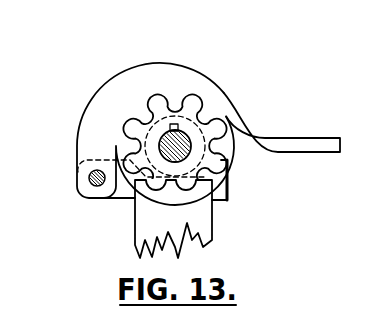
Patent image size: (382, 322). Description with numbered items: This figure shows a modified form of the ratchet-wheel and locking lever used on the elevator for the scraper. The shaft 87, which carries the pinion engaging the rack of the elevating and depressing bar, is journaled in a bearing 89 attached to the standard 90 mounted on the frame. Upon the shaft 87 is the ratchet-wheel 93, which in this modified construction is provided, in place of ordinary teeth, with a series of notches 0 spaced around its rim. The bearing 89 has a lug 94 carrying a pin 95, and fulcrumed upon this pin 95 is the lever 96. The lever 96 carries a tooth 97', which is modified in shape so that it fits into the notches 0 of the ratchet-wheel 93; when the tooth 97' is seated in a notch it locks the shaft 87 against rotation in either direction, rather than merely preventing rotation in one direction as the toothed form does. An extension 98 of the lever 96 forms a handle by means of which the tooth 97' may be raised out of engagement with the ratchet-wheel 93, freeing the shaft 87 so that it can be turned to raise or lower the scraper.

The lever 96 is at (155, 134).
The tooth 97' is at (186, 117).
The shaft 87 is at (180, 141).
The extension 98 is at (293, 145).
The notches 0 is at (222, 152).
The ratchet-wheel 93 is at (197, 157).
The bearing 89 is at (228, 189).
The standard 90 is at (173, 219).
The lug 94 is at (123, 190).
The pin 95 is at (90, 180).